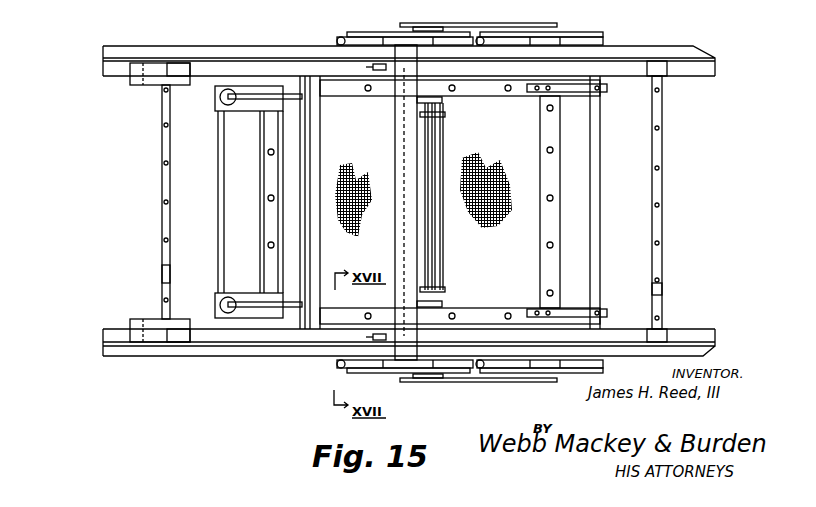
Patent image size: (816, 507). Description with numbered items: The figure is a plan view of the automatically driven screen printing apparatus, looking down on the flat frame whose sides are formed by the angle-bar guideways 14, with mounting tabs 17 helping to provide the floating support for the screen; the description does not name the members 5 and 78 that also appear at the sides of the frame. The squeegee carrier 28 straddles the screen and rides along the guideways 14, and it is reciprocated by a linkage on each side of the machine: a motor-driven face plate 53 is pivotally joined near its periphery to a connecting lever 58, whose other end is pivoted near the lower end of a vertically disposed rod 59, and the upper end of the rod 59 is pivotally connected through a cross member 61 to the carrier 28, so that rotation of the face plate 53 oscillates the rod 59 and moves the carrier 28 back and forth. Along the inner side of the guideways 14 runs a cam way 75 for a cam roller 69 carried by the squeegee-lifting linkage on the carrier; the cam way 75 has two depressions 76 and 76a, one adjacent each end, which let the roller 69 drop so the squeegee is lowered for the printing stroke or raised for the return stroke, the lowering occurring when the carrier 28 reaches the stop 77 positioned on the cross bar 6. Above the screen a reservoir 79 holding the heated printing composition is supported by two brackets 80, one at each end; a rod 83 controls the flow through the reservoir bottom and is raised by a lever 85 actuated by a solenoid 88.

The guideways 14 is at (261, 46).
The cam way 75 is at (110, 77).
The mounting tabs 17 is at (112, 329).
The brackets 80 is at (190, 86).
The depression 76 is at (174, 63).
The depression 76a is at (665, 72).
The cross bar 6 is at (162, 173).
The stop 77 is at (162, 272).
The right leg 5 is at (662, 180).
The leg block 78 is at (662, 290).
The solenoid 88 is at (228, 97).
The lever 85 is at (262, 104).
The reservoir 79 is at (320, 143).
The rod 83 is at (303, 250).
The cam roller 69 is at (370, 67).
The rod 59 is at (403, 52).
The carrier 28 is at (396, 28).
The connecting lever 58 is at (519, 25).
The cross member 61 is at (347, 33).
The face plate 53 is at (612, 20).